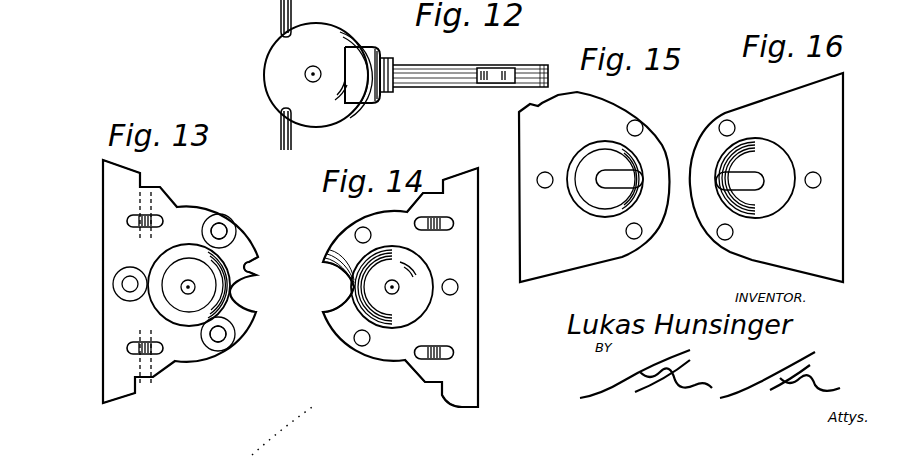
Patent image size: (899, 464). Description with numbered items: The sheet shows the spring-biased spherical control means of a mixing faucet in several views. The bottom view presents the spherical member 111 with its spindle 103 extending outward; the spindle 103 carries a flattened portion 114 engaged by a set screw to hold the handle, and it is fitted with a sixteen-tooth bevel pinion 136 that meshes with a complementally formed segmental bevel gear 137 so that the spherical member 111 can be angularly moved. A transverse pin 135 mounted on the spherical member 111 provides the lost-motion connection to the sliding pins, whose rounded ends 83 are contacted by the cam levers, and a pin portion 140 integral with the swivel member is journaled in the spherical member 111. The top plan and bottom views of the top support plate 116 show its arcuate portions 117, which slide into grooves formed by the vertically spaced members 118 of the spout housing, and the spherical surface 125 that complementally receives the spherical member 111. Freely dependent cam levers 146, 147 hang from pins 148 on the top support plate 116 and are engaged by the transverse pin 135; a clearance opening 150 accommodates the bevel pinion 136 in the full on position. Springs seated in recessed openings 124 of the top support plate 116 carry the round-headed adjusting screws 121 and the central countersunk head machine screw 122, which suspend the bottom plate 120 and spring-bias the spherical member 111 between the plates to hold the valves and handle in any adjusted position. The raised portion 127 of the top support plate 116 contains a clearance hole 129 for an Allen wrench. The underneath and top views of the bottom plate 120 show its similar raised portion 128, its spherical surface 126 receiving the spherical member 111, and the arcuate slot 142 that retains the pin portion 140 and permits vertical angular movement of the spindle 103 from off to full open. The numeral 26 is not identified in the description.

In FIG. 12, the rounded ends 83 is at (190, 7).
In FIG. 12, the spindle 103 is at (462, 66).
In FIG. 12, the spherical member 111 is at (266, 62).
In FIG. 12, the flattened portion 114 is at (506, 68).
In FIG. 12, the transverse pin 135 is at (281, 20).
In FIG. 12, the bevel pinion 136 is at (394, 92).
In FIG. 12, the bevel gear 137 is at (366, 104).
In FIG. 12, the pin portion 140 is at (313, 66).
In FIG. 13, the top support plate 116 is at (240, 247).
In FIG. 14, the top support plate 116 is at (467, 386).
In FIG. 13, the arcuate portions 117 is at (140, 166).
In FIG. 14, the upper members 118 is at (474, 168).
In FIG. 13, the adjusting screws 121 is at (225, 228).
In FIG. 14, the adjusting screws 121 is at (359, 229).
In FIG. 15, the adjusting screws 121 is at (637, 122).
In FIG. 16, the adjusting screws 121 is at (728, 122).
In FIG. 13, the countersunk head machine screw 122 is at (129, 292).
In FIG. 14, the countersunk head machine screw 122 is at (456, 291).
In FIG. 15, the countersunk head machine screw 122 is at (544, 188).
In FIG. 16, the countersunk head machine screw 122 is at (816, 188).
In FIG. 13, the recessed openings 124 is at (219, 218).
In FIG. 14, the spherical surface 125 is at (384, 322).
In FIG. 13, the raised portion 127 is at (175, 262).
In FIG. 13, the clearance hole 129 is at (196, 290).
In FIG. 14, the clearance hole 129 is at (396, 292).
In FIG. 13, the cam lever 146 is at (130, 352).
In FIG. 14, the cam lever 146 is at (454, 352).
In FIG. 13, the cam lever 147 is at (164, 221).
In FIG. 14, the cam lever 147 is at (440, 217).
In FIG. 13, the pins 148 is at (160, 190).
In FIG. 13, the clearance opening 150 is at (252, 266).
In FIG. 14, the clearance opening 150 is at (340, 272).
In FIG. 15, the bottom plate 120 is at (560, 273).
In FIG. 16, the bottom plate 120 is at (757, 260).
In FIG. 16, the spherical surface 126 is at (757, 157).
In FIG. 15, the raised portion 128 is at (598, 157).
In FIG. 15, the slot 142 is at (602, 186).
In FIG. 16, the slot 142 is at (758, 187).
In FIG. 16, the housing 26 is at (719, 206).